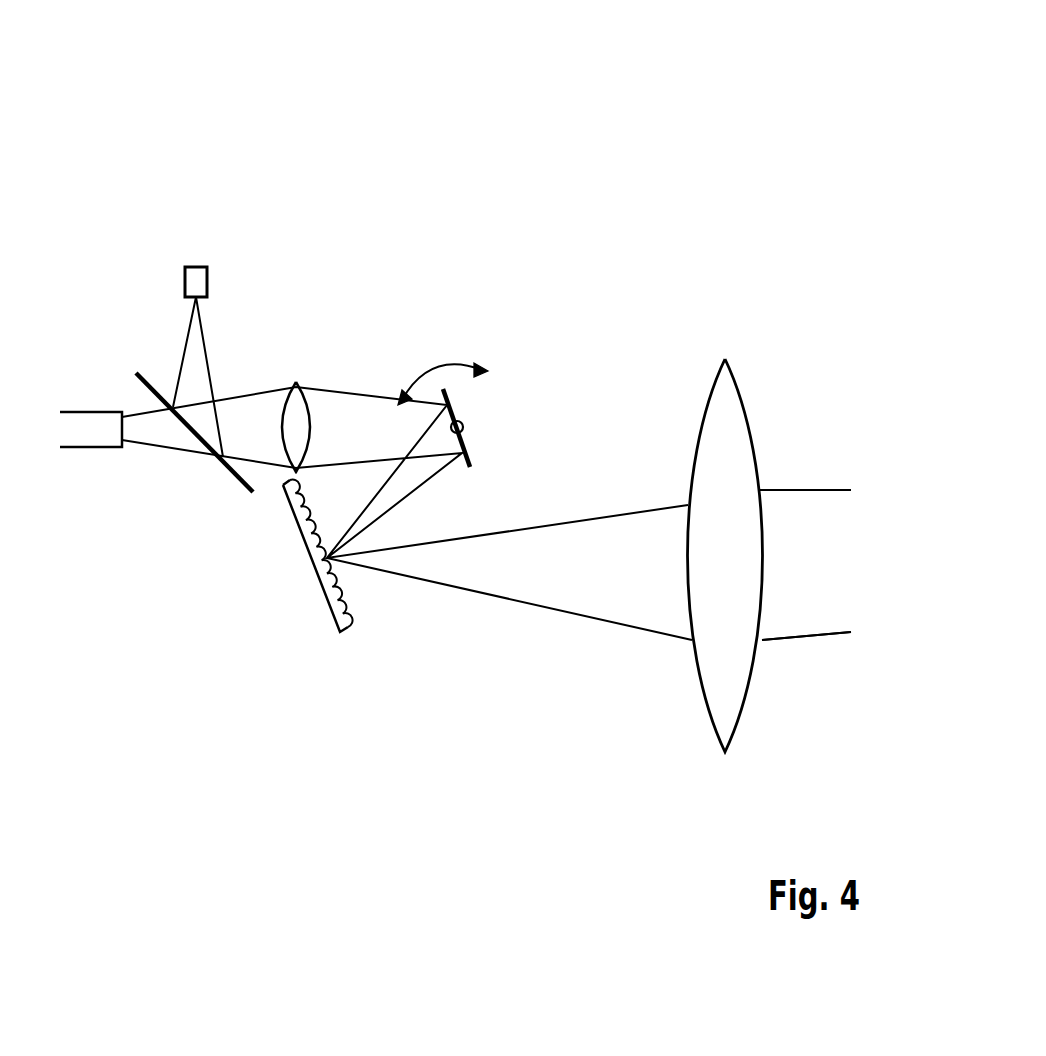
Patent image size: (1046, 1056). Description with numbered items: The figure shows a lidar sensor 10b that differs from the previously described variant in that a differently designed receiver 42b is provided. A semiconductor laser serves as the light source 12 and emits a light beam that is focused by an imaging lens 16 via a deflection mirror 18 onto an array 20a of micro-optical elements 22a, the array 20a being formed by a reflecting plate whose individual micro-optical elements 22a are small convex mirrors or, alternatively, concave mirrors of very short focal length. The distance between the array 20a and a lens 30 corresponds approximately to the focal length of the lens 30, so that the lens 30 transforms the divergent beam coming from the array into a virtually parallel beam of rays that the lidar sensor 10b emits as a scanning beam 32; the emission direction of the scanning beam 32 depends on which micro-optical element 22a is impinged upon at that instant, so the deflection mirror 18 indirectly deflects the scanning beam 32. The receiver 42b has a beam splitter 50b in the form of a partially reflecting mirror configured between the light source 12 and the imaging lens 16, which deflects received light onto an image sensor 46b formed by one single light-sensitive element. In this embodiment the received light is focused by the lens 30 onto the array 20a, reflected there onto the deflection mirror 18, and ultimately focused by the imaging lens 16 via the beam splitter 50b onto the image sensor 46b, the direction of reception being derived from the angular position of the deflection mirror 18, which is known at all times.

The lidar sensor 10b is at (498, 120).
The light source 12 is at (88, 412).
The imaging lens 16 is at (296, 382).
The deflection mirror 18 is at (453, 407).
The array of micro-optical elements 20a is at (285, 569).
The micro-optical elements 22a is at (318, 600).
The lens 30 is at (734, 383).
The scanning beam 32 is at (807, 632).
The receiver 42b is at (195, 260).
The image sensor 46b is at (208, 286).
The beam splitter 50b is at (150, 378).